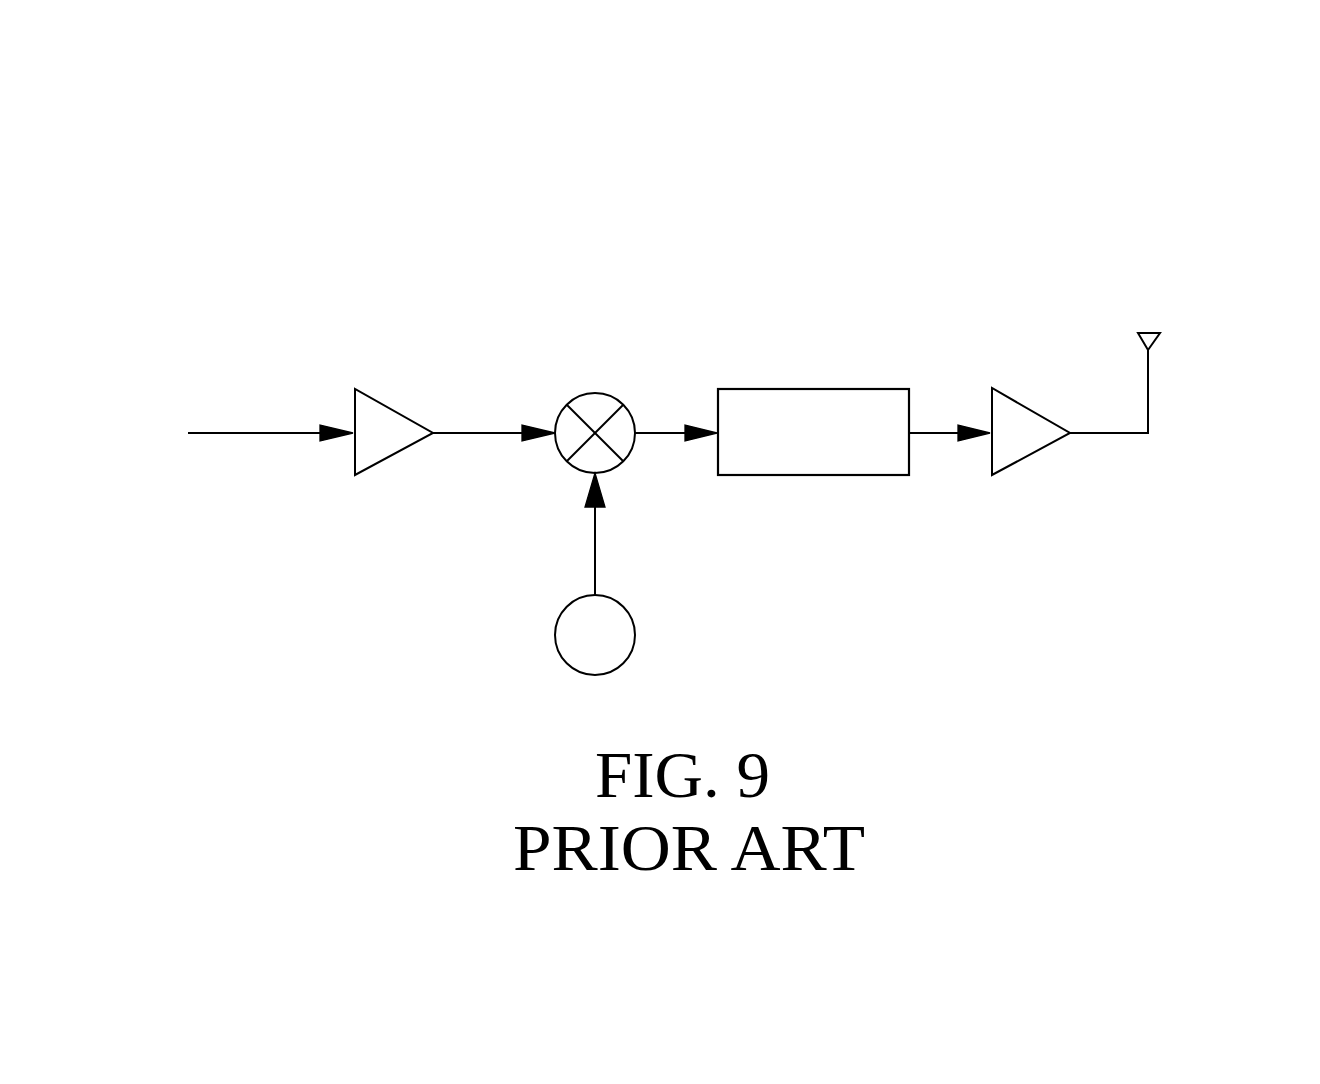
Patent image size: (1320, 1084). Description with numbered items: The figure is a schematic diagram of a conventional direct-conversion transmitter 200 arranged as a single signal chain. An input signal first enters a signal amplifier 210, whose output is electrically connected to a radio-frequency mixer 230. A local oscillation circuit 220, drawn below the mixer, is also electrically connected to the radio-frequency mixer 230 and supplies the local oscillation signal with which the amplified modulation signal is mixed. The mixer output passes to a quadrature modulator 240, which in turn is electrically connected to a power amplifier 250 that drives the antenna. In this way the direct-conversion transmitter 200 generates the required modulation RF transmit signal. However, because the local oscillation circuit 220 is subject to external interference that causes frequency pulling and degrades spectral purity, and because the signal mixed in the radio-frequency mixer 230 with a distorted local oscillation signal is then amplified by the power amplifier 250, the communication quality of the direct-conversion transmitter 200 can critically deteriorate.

The direct-conversion transmitter 200 is at (1230, 227).
The signal amplifier 210 is at (393, 407).
The local oscillation circuit 220 is at (635, 630).
The radio-frequency mixer 230 is at (595, 392).
The quadrature modulator 240 is at (813, 389).
The power amplifier 250 is at (1030, 405).